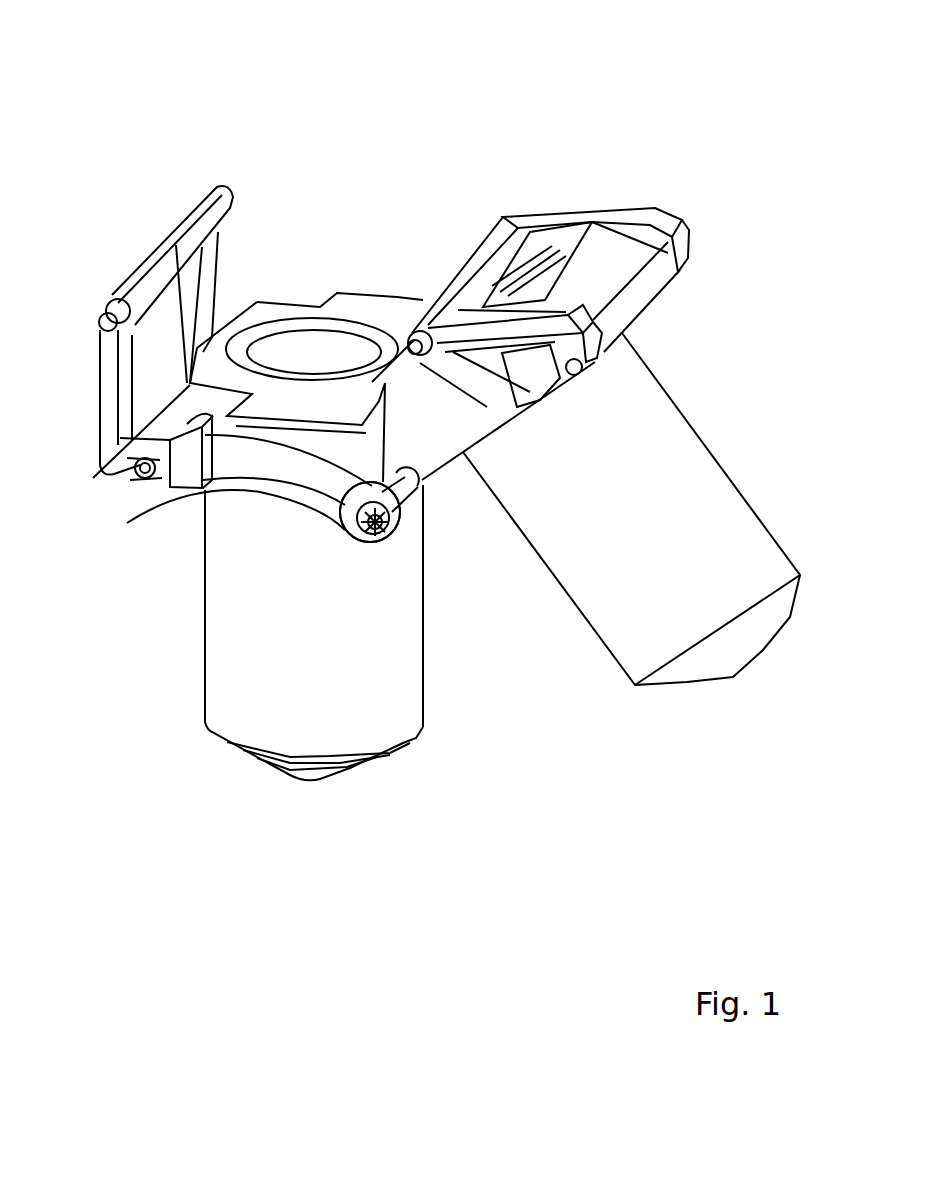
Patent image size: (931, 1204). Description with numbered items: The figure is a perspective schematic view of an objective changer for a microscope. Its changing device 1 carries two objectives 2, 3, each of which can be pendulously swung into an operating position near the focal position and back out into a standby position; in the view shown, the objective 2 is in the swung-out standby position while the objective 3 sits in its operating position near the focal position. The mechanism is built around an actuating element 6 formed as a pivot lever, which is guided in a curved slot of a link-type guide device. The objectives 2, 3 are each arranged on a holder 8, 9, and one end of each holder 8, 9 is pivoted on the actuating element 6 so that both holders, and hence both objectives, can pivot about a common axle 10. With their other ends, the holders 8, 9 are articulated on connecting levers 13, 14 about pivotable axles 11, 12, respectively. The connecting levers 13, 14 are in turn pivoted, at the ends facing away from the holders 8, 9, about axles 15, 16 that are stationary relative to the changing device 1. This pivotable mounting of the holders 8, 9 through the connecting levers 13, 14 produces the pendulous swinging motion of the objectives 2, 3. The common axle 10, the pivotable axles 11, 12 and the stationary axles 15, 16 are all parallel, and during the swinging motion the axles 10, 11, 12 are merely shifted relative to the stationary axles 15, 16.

The changing device 1 is at (525, 172).
The objective 2 is at (700, 533).
The objective 3 is at (318, 700).
The actuating element 6 is at (362, 520).
The holder 8 is at (622, 285).
The holder 9 is at (289, 298).
The common axle 10 is at (365, 517).
The pivotable axle 11 is at (583, 365).
The pivotable axle 12 is at (141, 469).
The connecting lever 13 is at (632, 203).
The connecting lever 14 is at (160, 246).
The axle 15 is at (403, 333).
The axle 16 is at (106, 298).